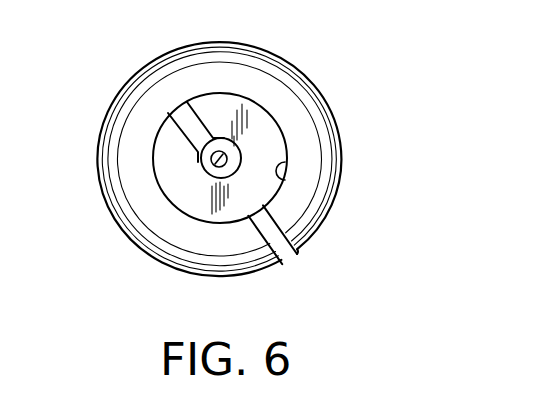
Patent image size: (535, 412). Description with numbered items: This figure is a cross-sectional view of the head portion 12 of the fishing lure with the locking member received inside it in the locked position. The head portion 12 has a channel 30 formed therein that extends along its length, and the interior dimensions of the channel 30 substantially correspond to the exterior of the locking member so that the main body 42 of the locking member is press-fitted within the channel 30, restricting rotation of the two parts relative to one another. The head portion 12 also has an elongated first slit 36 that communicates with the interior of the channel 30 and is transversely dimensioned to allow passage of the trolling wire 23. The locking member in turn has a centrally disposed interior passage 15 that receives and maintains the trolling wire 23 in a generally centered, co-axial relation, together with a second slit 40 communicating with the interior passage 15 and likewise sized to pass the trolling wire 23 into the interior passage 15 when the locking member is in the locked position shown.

The head portion 12 is at (321, 89).
The interior passage 15 is at (237, 152).
The trolling wire 23 is at (203, 172).
The channel 30 is at (274, 177).
The first slit 36 is at (289, 250).
The second slit 40 is at (190, 120).
The main body 42 is at (200, 204).